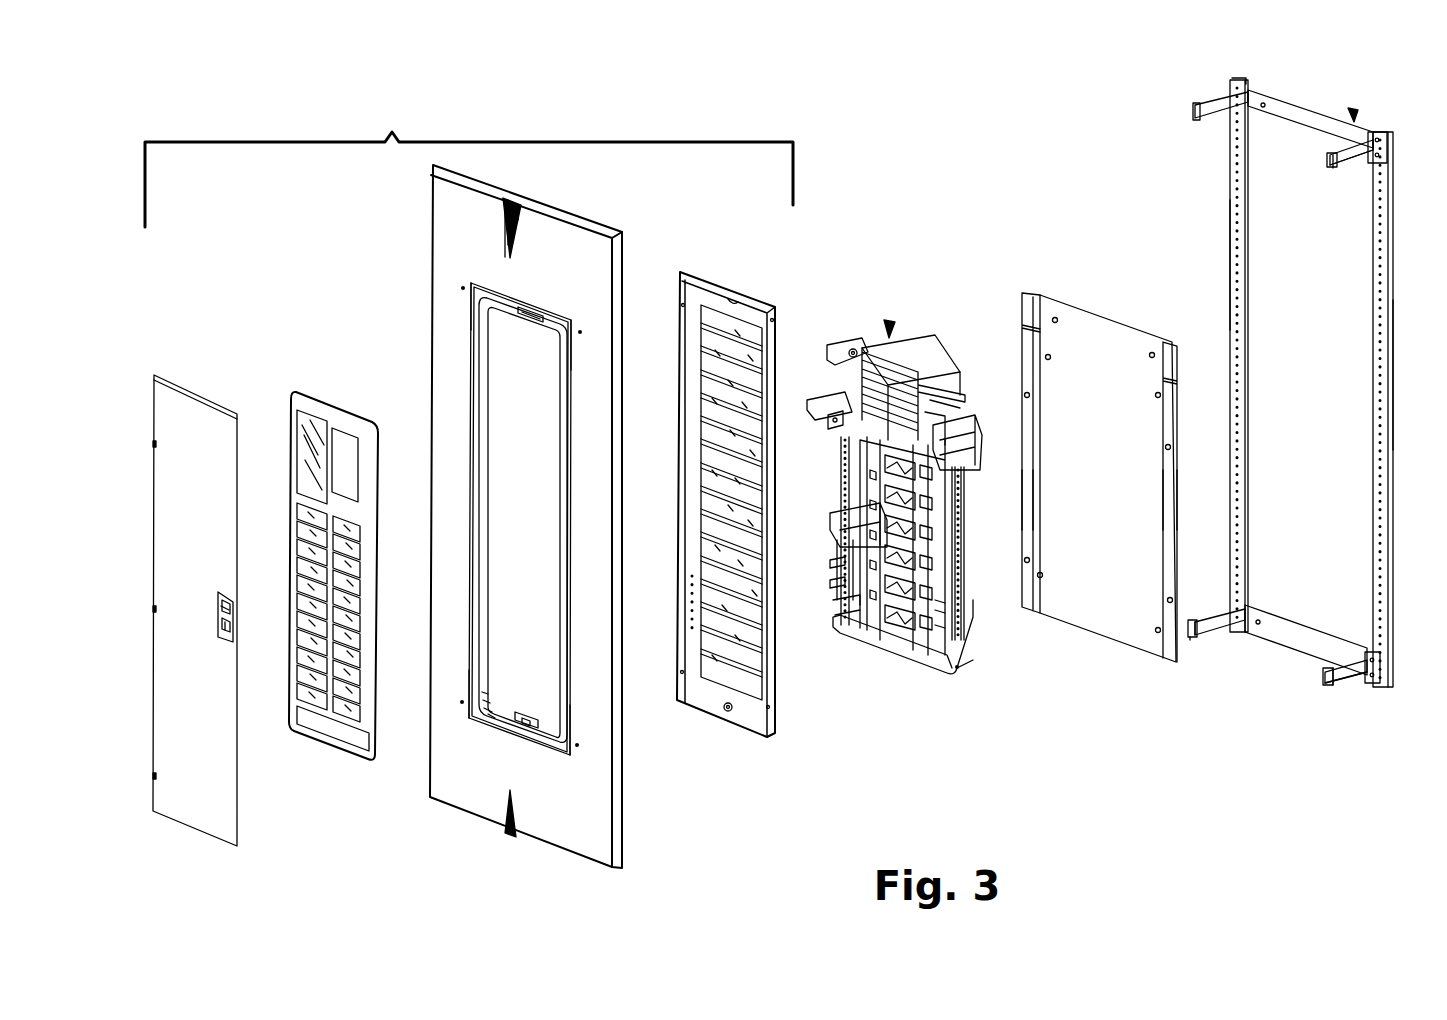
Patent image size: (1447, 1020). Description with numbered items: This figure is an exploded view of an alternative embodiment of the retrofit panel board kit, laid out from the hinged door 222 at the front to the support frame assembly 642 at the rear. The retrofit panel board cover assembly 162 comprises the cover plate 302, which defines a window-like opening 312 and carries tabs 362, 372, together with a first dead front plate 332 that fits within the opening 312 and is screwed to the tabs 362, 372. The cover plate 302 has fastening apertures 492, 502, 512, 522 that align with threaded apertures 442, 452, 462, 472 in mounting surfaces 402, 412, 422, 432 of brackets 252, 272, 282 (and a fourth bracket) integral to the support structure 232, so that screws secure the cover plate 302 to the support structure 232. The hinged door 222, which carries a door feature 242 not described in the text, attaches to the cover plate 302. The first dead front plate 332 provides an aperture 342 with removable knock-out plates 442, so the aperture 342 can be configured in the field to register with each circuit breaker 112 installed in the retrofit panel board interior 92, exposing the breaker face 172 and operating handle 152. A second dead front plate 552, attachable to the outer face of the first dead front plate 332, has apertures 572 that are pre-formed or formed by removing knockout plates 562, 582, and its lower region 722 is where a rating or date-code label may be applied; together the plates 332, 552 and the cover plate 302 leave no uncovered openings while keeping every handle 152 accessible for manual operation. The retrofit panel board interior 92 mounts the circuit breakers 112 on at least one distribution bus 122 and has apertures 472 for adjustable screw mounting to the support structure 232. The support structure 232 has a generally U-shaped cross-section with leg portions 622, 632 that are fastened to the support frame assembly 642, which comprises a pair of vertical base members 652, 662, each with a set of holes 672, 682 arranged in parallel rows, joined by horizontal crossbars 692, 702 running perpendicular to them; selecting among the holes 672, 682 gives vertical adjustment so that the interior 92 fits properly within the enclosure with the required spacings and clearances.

The retrofit panel board cover assembly 162 is at (469, 167).
The hinged door 222 is at (181, 421).
The door latch 242 is at (219, 625).
The second dead front plate 552 is at (341, 420).
The knockout plate 562 is at (350, 480).
The aperture 572 is at (309, 597).
The knockout plate 582 is at (348, 595).
The lower label panel 722 is at (346, 736).
The retrofit panel board cover plate 302 is at (543, 245).
The window-like opening 312 is at (525, 405).
The tab 362 is at (533, 318).
The tab 372 is at (527, 715).
The aperture 502 is at (463, 288).
The aperture 492 is at (580, 332).
The aperture 512 is at (462, 702).
The aperture 522 is at (577, 745).
The first dead front plate 332 is at (700, 278).
The aperture 342 is at (731, 593).
The threaded aperture 442 is at (752, 655).
The aperture 472 is at (850, 347).
The retrofit panel board interior 92 is at (890, 335).
The circuit breaker 112 is at (840, 500).
The face 172 is at (840, 530).
The operating handle 152 is at (843, 545).
The distribution bus 122 is at (957, 667).
The retrofit panel board interior support structure 232 is at (1080, 330).
The leg portion 622 is at (1170, 496).
The leg portion 632 is at (1022, 500).
The support frame assembly 642 is at (1354, 120).
The set of holes 682 is at (1236, 203).
The vertical base member 662 is at (1232, 262).
The set of holes 672 is at (1382, 268).
The vertical base member 652 is at (1388, 372).
The horizontal crossbar 692 is at (1283, 107).
The horizontal crossbar 702 is at (1297, 638).
The threaded aperture 452 is at (1195, 108).
The mounting surface 412 is at (1193, 112).
The bracket 252 is at (1380, 188).
The mounting surface 402 is at (1333, 168).
The bracket 272 is at (1210, 627).
The threaded aperture 462 is at (1190, 622).
The mounting surface 422 is at (1190, 640).
The bracket 282 is at (1365, 678).
The mounting surface 432 is at (1337, 684).